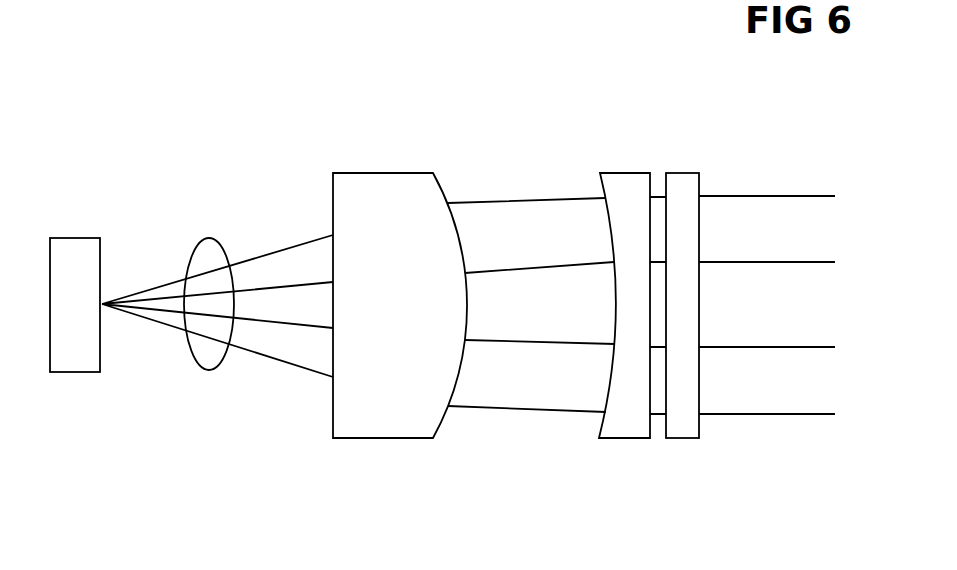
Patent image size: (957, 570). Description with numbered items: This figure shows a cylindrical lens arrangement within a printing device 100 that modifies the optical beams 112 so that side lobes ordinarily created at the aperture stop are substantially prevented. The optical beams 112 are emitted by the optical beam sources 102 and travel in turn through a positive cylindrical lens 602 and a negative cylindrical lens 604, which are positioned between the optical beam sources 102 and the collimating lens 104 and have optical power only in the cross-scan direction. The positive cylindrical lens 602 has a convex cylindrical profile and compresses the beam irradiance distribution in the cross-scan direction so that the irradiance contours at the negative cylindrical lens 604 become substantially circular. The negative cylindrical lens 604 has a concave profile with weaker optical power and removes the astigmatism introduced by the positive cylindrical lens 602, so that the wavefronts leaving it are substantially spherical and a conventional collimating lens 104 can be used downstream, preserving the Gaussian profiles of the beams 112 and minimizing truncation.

The printing device 100 is at (112, 87).
The optical beam sources 102 is at (67, 372).
The optical beams 112 is at (209, 370).
The positive cylindrical lens 602 is at (370, 173).
The negative cylindrical lens 604 is at (602, 187).
The collimating lens 104 is at (688, 438).